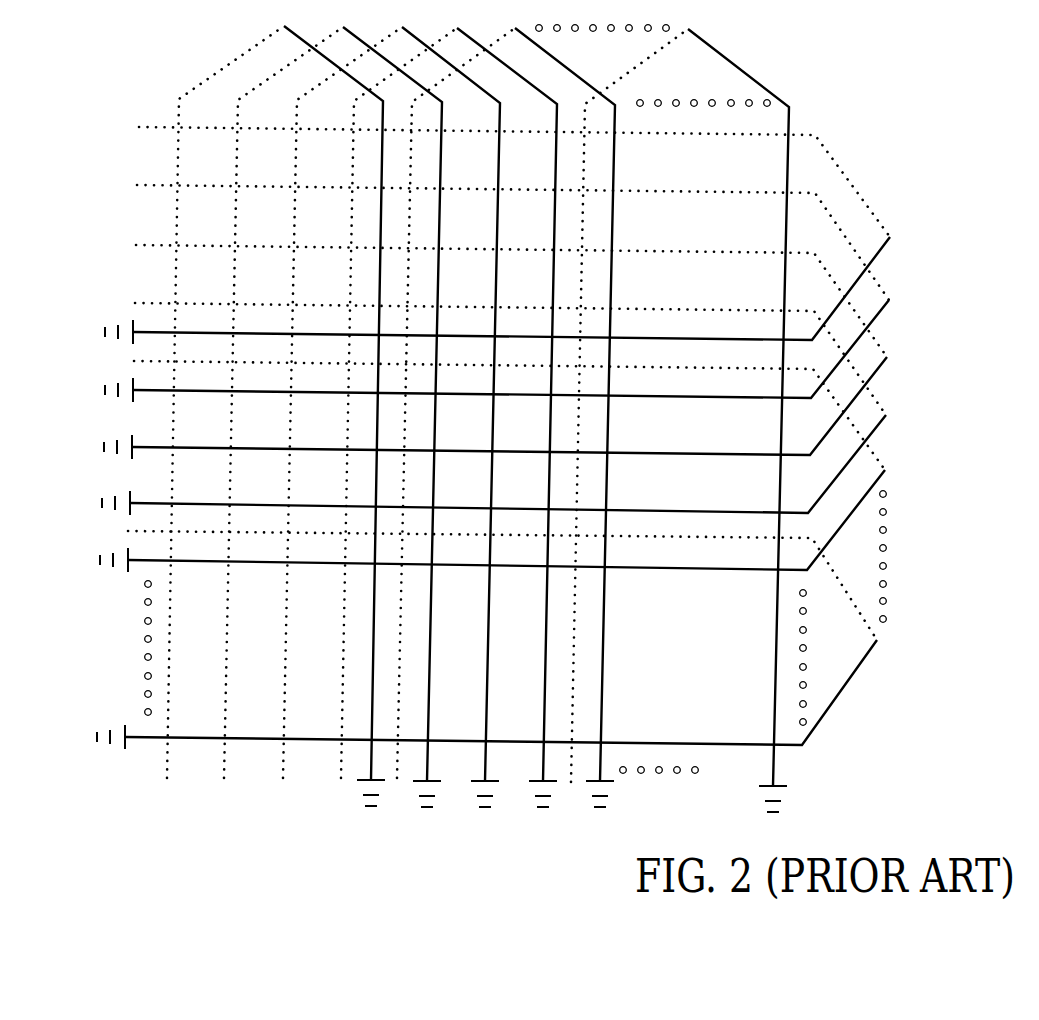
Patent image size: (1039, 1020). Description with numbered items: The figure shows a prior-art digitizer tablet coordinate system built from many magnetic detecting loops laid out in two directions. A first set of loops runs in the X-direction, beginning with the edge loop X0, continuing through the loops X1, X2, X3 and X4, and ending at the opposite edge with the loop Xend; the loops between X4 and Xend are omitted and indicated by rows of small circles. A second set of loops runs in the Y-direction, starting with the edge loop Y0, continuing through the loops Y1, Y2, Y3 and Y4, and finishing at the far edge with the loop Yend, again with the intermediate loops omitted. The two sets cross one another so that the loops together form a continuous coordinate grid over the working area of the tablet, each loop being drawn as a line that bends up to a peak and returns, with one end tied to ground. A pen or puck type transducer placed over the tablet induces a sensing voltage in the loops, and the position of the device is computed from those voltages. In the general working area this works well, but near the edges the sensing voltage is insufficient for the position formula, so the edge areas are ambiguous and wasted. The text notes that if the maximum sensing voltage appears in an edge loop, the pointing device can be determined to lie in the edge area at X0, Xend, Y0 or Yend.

The edge loop X0 is at (270, 417).
The magnetic detecting loop X1 is at (327, 418).
The magnetic detecting loop X2 is at (385, 418).
The magnetic detecting loop X3 is at (443, 418).
The magnetic detecting loop X4 is at (500, 418).
The edge loop Xend is at (656, 436).
The edge loop Y0 is at (497, 232).
The magnetic detecting loop Y1 is at (497, 288).
The magnetic detecting loop Y2 is at (495, 346).
The magnetic detecting loop Y3 is at (494, 404).
The magnetic detecting loop Y4 is at (492, 462).
The edge loop Yend is at (472, 632).